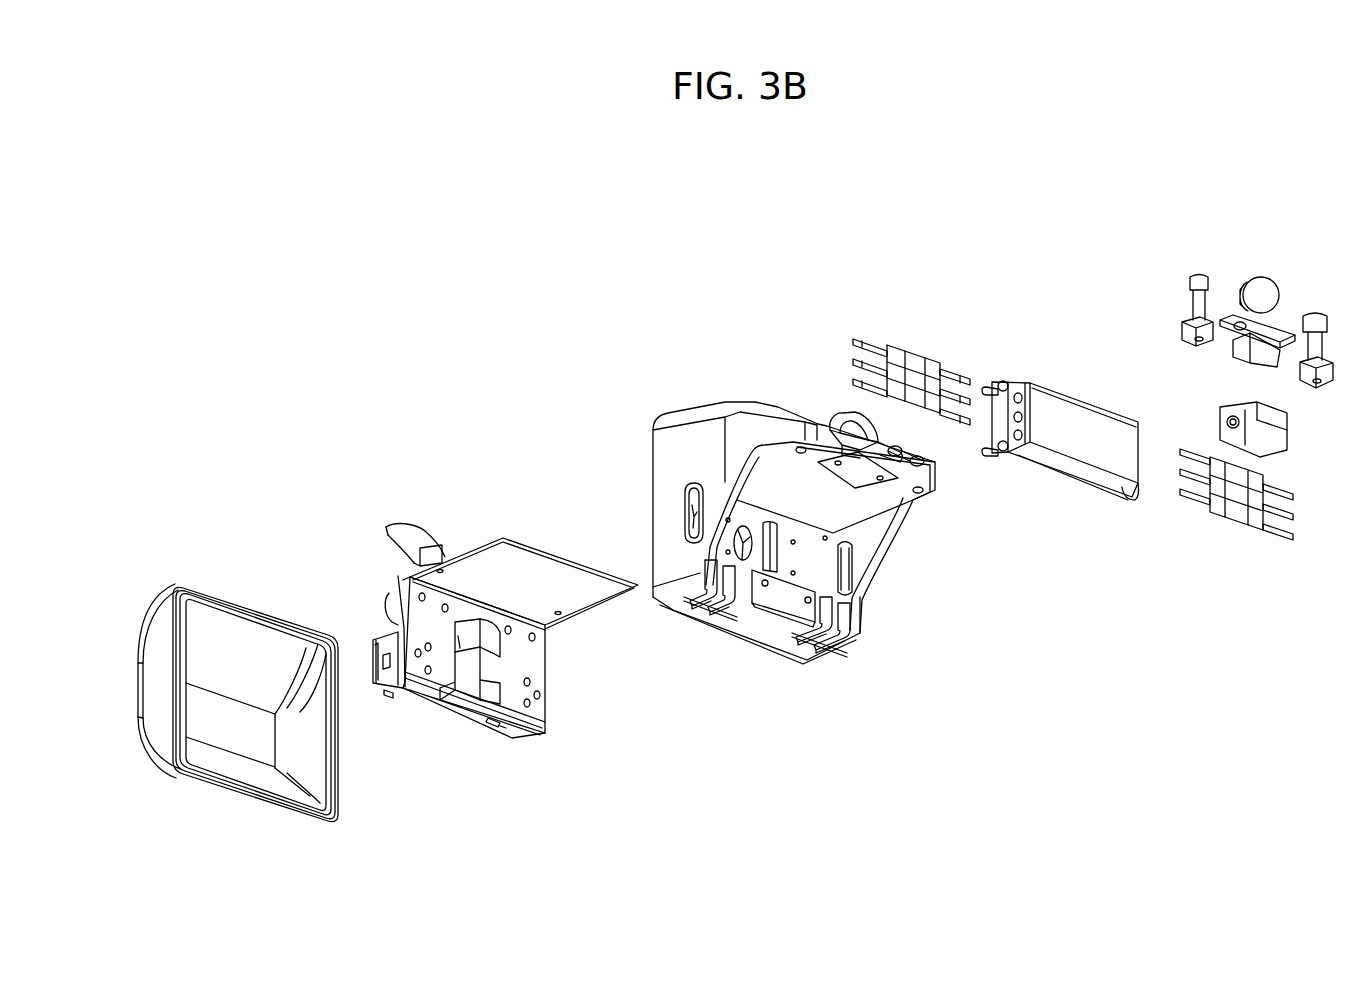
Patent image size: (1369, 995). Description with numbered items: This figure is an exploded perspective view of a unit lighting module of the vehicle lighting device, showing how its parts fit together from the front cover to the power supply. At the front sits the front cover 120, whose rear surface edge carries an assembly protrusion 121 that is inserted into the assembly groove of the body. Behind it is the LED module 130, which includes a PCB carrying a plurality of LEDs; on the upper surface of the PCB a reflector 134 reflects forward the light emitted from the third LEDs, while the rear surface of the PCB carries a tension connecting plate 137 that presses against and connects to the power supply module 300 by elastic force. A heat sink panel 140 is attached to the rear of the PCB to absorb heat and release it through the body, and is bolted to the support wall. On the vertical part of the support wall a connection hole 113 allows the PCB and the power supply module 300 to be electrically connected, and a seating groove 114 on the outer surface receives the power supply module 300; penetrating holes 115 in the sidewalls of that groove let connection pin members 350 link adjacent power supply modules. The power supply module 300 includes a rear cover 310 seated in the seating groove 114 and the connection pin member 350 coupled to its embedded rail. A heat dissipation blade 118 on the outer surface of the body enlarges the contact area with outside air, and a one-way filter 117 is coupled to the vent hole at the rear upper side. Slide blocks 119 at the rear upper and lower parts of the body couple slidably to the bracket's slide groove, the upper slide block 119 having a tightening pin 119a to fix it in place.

The front cover 120 is at (242, 545).
The assembly protrusion 121 is at (175, 583).
The LED module 130 is at (499, 460).
The reflector 134 is at (435, 533).
The tension connecting plate 137 is at (492, 633).
The heat sink panel 140 is at (488, 672).
The connection hole 113 is at (743, 542).
The seating groove 114 is at (803, 582).
The penetrating hole 115 is at (690, 520).
The heat dissipation blade 118 is at (718, 578).
The connection pin member 350 is at (916, 308).
The power supply module 300 is at (1060, 352).
The rear cover 310 is at (1078, 440).
The one-way filter 117 is at (1263, 295).
The tightening pin 119a is at (1198, 295).
The slide block 119 is at (1297, 375).